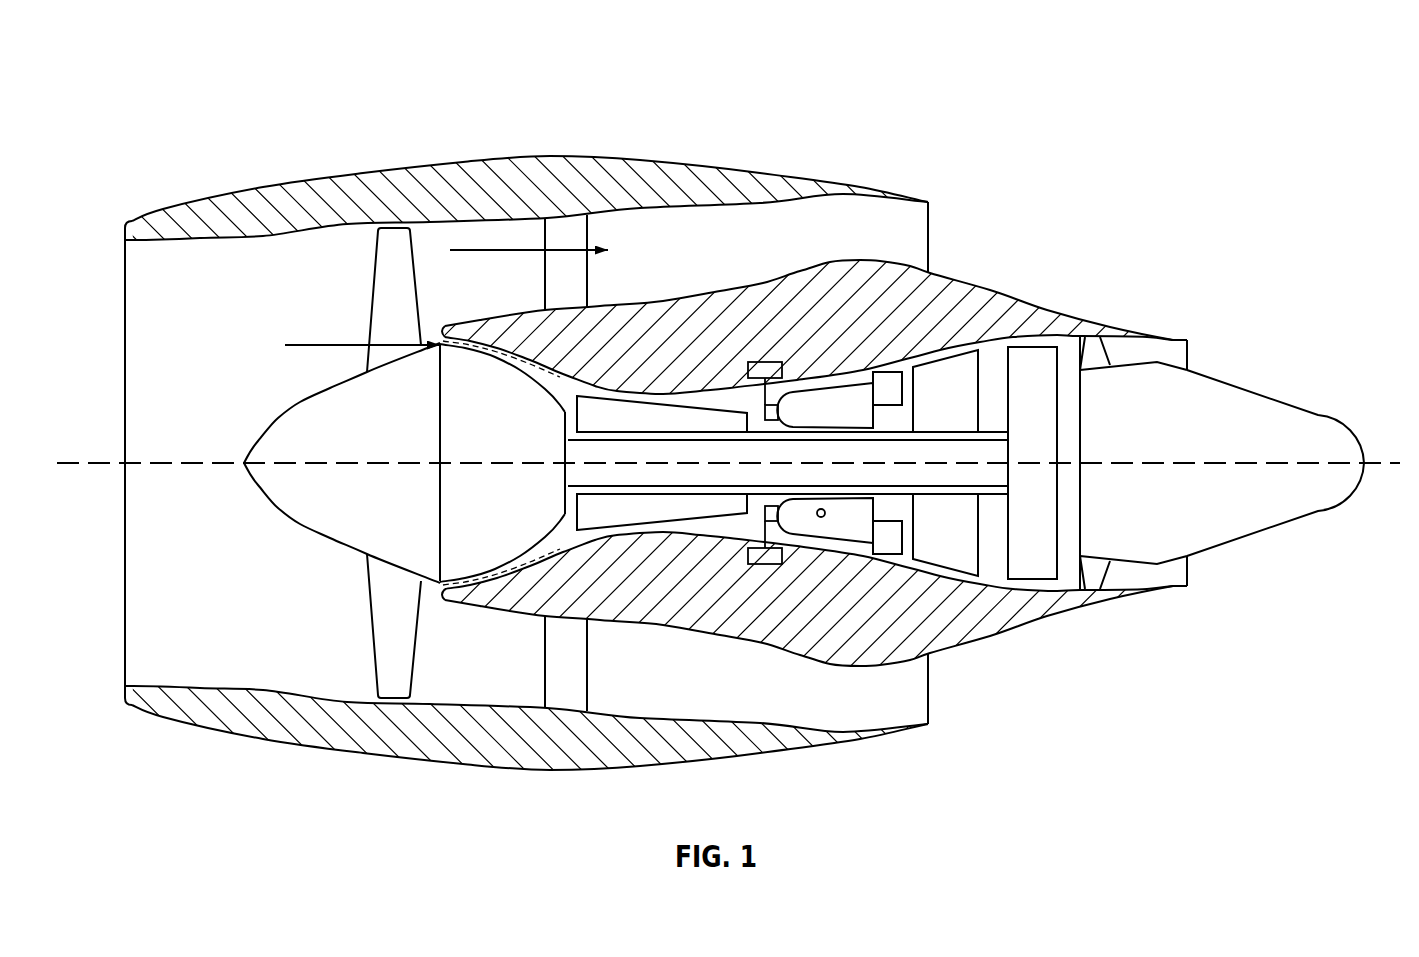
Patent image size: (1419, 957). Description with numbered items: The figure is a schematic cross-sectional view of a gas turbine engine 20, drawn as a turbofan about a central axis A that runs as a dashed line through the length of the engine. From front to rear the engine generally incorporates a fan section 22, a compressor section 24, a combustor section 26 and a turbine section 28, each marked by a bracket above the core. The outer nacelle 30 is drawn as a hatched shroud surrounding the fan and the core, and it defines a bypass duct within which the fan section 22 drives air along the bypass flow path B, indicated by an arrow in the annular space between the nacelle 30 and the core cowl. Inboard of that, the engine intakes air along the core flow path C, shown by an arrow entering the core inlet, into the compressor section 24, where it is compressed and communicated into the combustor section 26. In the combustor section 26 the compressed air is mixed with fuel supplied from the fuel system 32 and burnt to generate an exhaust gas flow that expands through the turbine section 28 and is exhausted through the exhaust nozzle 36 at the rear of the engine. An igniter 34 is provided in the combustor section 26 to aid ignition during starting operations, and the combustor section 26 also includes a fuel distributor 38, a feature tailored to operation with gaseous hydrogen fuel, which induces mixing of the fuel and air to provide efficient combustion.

The gas turbine engine 20 is at (117, 91).
The fan section 22 is at (443, 140).
The compressor section 24 is at (745, 287).
The combustor section 26 is at (907, 258).
The turbine section 28 is at (1098, 258).
The nacelle 30 is at (462, 180).
The fuel system 32 is at (758, 559).
The igniter 34 is at (821, 519).
The exhaust nozzle 36 is at (1242, 420).
The fuel distributor 38 is at (758, 521).
The engine central longitudinal axis A is at (80, 463).
The bypass flow path B is at (529, 268).
The core flow path C is at (362, 328).